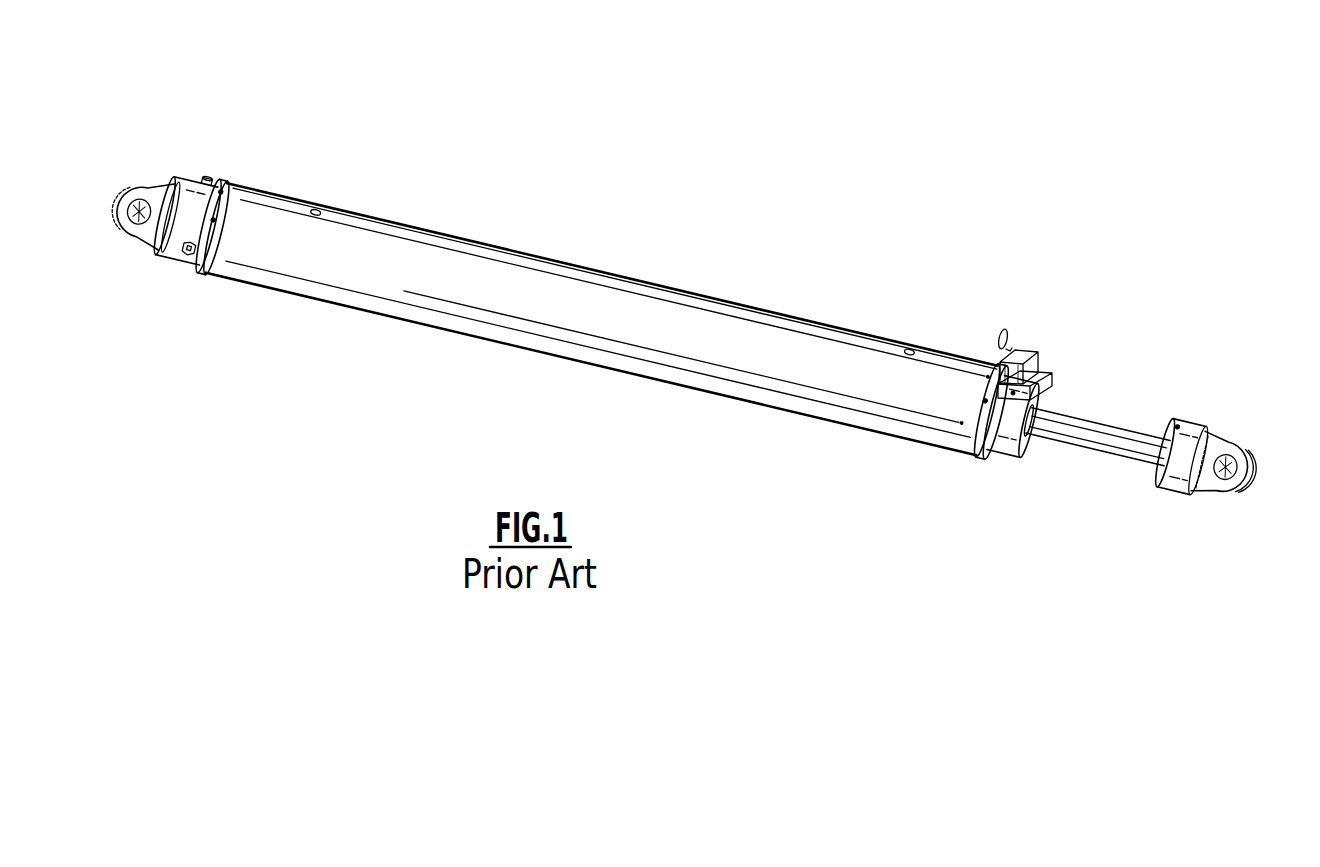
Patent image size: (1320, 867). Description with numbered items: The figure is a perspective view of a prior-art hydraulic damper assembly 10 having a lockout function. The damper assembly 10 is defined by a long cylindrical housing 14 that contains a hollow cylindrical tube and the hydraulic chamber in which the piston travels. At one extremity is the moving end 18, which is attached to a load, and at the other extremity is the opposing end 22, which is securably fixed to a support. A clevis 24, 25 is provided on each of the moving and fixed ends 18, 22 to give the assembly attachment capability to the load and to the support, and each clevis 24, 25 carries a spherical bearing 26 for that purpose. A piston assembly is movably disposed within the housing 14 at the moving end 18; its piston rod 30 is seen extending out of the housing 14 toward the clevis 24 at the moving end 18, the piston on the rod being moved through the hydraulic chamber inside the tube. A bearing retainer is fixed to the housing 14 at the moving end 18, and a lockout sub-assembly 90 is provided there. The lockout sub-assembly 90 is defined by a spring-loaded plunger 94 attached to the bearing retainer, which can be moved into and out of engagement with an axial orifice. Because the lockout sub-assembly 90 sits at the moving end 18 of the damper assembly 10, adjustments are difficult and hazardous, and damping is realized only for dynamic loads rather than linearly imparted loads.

The hydraulic damper assembly 10 is at (376, 53).
The cylindrical housing 14 is at (664, 286).
The moving end 18 is at (1217, 484).
The opposing end 22 is at (178, 268).
The clevis 24 is at (1237, 439).
The clevis 25 is at (128, 184).
The spherical bearings 26 is at (130, 226).
The piston rod 30 is at (1097, 441).
The lockout sub-assembly 90 is at (1000, 366).
The spring-loaded plunger 94 is at (1018, 352).